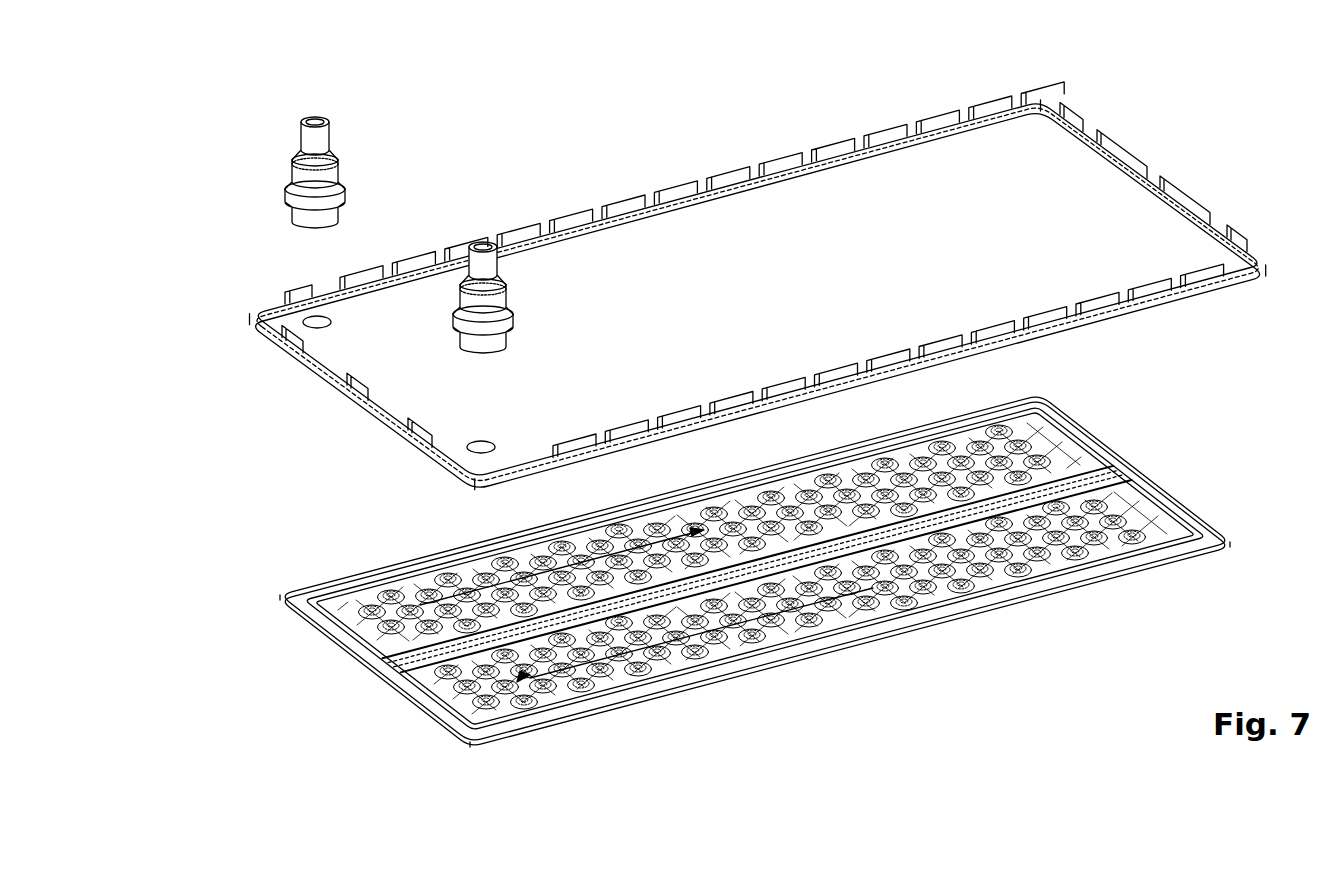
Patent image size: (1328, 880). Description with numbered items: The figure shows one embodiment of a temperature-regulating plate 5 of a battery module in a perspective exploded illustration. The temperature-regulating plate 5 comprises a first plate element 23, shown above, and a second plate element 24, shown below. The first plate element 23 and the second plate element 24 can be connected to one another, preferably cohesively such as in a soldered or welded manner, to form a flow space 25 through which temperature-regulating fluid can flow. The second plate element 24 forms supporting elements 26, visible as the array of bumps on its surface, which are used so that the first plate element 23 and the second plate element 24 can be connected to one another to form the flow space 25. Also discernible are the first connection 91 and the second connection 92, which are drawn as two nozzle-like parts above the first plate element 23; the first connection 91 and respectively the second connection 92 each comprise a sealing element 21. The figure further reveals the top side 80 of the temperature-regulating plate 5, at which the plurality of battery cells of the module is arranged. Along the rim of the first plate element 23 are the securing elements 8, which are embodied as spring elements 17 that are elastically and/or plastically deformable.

The temperature-regulating plate 5 is at (770, 397).
The securing elements 8 is at (1186, 177).
The spring elements 17 is at (1240, 234).
The sealing element 21 is at (400, 235).
The first plate element 23 is at (797, 270).
The second plate element 24 is at (755, 566).
The flow space 25 is at (1092, 497).
The supporting elements 26 is at (1072, 466).
The top side 80 is at (781, 286).
The first connection 91 is at (505, 300).
The second connection 92 is at (305, 140).